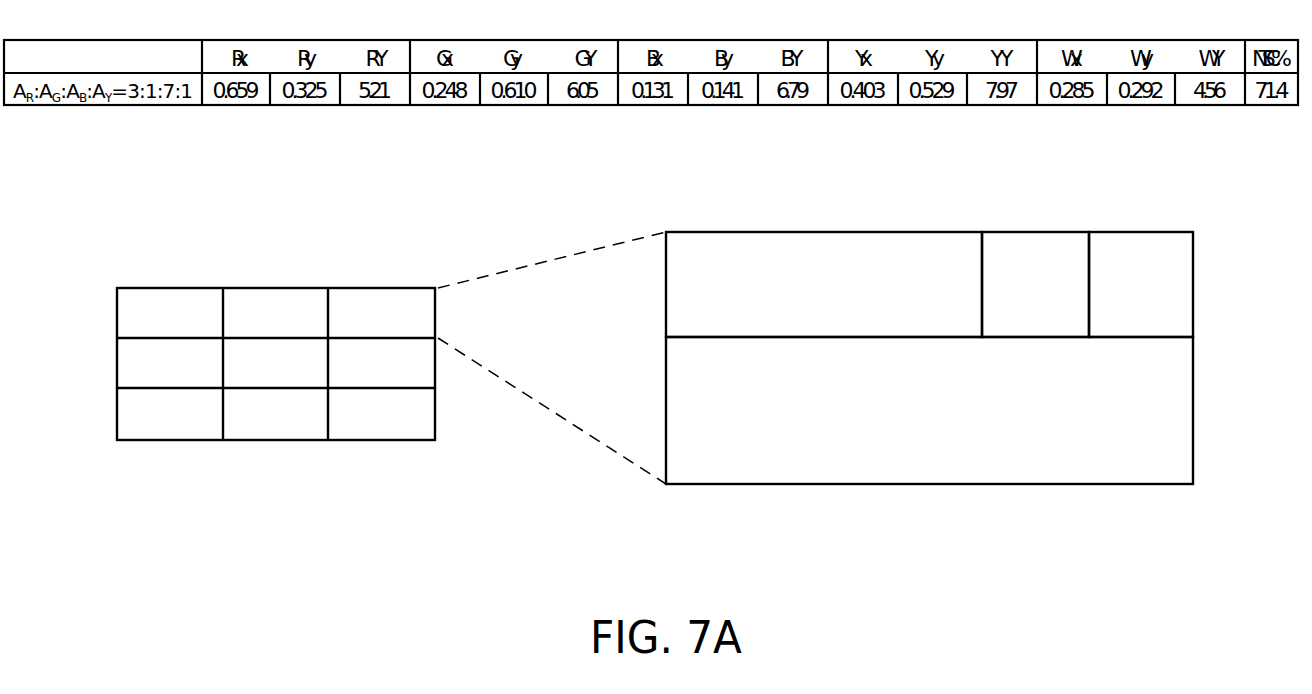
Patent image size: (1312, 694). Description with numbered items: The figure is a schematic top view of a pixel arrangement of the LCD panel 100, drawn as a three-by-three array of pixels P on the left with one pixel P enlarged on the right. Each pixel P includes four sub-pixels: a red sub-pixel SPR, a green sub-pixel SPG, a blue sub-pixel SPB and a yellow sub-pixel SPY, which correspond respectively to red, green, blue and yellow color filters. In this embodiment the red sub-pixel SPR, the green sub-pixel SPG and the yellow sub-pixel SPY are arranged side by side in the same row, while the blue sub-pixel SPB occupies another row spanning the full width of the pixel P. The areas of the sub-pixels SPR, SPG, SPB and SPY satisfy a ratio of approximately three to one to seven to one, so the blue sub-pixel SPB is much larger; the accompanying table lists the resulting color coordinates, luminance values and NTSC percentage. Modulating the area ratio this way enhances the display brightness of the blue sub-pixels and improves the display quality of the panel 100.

The LCD panel 100 is at (276, 420).
The pixel P is at (276, 364).
The red sub-pixel SPR is at (824, 284).
The green sub-pixel SPG is at (1035, 284).
The yellow sub-pixel SPY is at (1141, 284).
The blue sub-pixel SPB is at (929, 410).